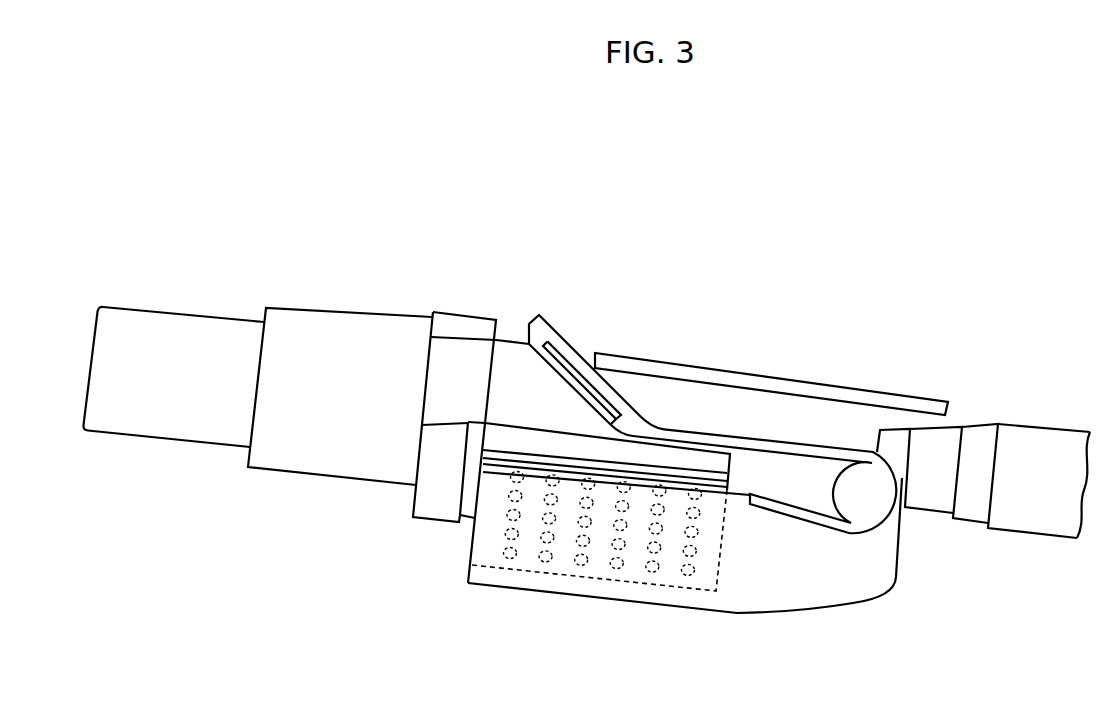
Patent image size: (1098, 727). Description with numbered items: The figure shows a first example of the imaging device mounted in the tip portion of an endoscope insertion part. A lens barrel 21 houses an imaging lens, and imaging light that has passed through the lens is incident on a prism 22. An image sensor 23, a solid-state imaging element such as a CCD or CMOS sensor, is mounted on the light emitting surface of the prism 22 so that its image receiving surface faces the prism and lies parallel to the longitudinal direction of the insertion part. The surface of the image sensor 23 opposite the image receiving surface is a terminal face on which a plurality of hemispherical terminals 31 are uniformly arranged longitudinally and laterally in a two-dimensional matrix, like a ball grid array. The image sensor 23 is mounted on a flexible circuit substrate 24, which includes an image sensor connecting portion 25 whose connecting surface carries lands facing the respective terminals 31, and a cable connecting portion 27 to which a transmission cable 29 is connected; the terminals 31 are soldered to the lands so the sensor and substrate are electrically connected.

The lens barrel 21 is at (347, 335).
The prism 22 is at (510, 373).
The image sensor 23 is at (495, 438).
The circuit substrate 24 is at (856, 603).
The image sensor connecting portion 25 is at (750, 583).
The cable connecting portion 27 is at (758, 403).
The transmission cable 29 is at (1032, 442).
The terminals 31 is at (545, 561).